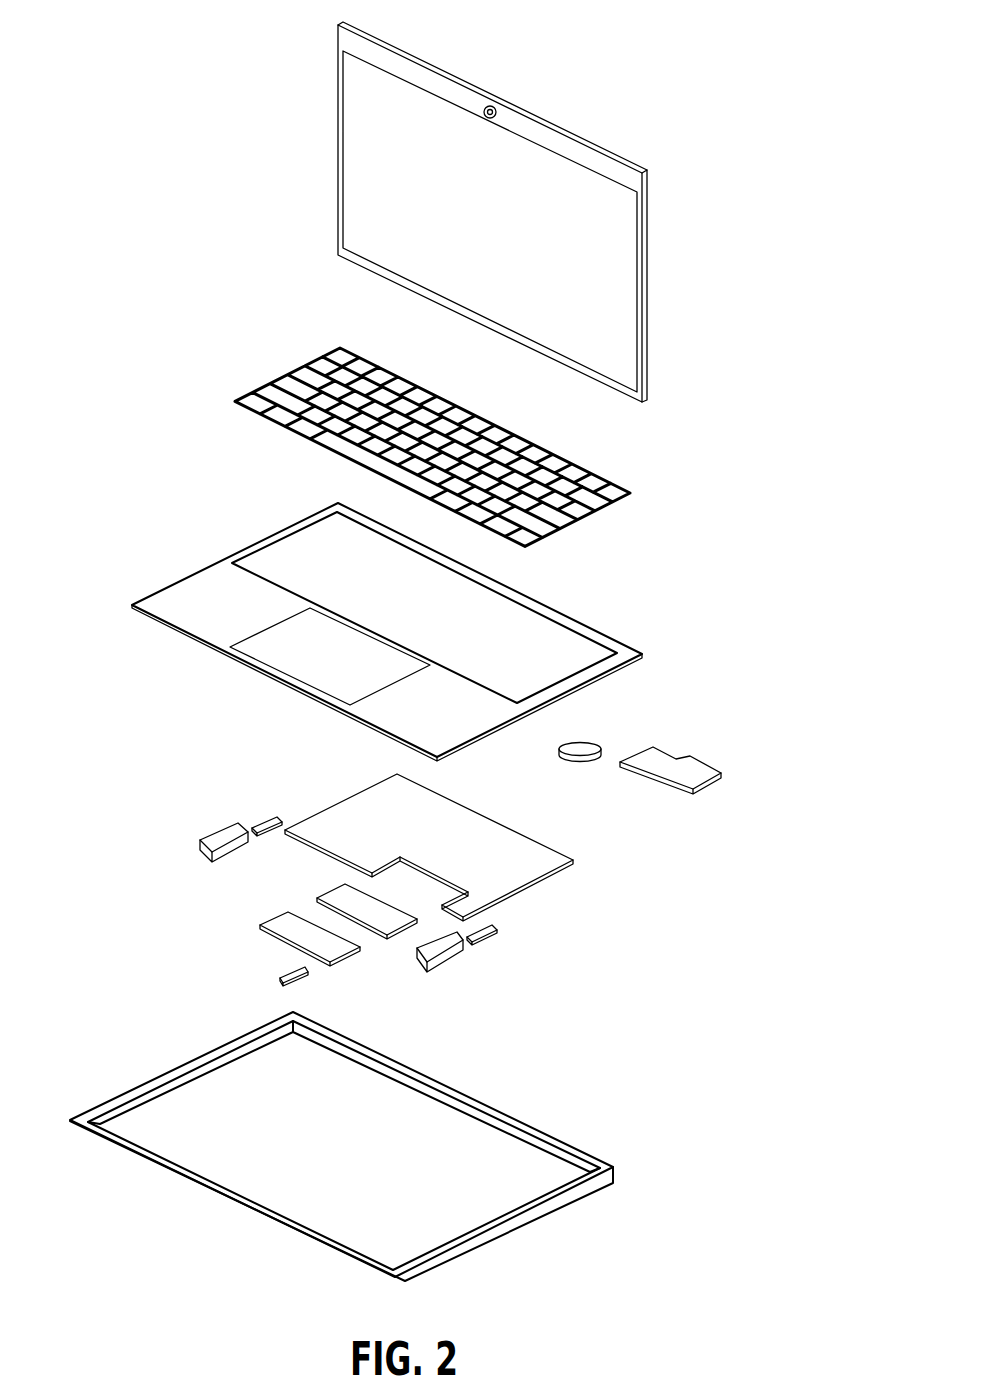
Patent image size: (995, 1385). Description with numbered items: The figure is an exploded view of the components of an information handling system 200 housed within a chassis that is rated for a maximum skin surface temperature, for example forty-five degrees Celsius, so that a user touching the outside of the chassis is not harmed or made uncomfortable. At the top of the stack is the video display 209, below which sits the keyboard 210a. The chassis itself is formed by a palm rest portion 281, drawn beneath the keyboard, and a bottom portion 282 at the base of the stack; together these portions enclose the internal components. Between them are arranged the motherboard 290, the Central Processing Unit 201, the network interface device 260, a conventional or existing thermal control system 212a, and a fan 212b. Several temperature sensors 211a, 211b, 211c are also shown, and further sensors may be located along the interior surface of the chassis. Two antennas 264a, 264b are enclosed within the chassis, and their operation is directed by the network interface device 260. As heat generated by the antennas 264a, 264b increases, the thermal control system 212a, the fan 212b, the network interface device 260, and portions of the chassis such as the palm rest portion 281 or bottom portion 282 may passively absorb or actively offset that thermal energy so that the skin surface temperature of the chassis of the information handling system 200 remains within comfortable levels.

The information handling system 200 is at (90, 90).
The video display 209 is at (652, 292).
The keyboard 210a is at (601, 516).
The palm rest portion 281 is at (598, 617).
The fan 212b is at (595, 739).
The thermal control system 212a is at (700, 751).
The motherboard 290 is at (543, 839).
The network interface device 260 is at (315, 894).
The Central Processing Unit 201 is at (258, 917).
The temperature sensor 211a is at (252, 812).
The temperature sensor 211b is at (503, 929).
The temperature sensor 211c is at (278, 974).
The antenna 264a is at (195, 845).
The antenna 264b is at (452, 964).
The bottom portion 282 is at (543, 1121).